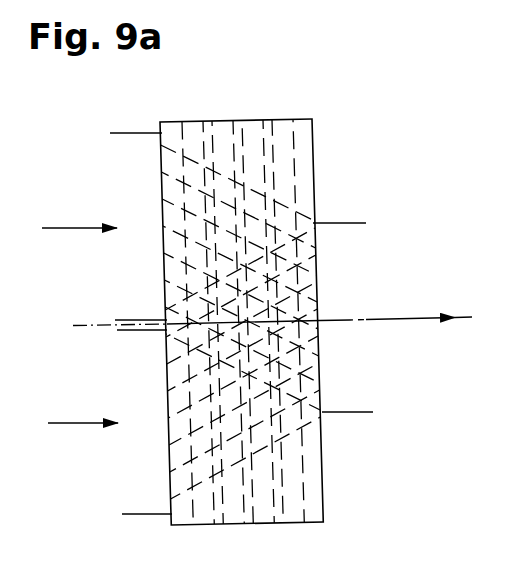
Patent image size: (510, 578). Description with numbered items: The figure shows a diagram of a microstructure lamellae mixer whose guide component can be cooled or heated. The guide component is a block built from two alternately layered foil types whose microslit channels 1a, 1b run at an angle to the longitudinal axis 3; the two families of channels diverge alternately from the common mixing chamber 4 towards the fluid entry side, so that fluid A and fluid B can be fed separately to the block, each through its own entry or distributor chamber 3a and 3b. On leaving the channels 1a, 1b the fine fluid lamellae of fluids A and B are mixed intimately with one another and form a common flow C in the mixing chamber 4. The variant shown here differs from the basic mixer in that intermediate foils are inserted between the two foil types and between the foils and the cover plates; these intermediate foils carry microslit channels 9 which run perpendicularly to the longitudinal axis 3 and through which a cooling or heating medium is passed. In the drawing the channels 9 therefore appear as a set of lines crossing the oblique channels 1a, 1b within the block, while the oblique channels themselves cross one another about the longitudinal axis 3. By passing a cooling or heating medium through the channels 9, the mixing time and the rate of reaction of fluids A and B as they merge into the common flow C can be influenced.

The microslit channels 9 is at (250, 130).
The microslit channel 1a is at (293, 412).
The microslit channel 1b is at (290, 228).
The longitudinal axis 3 is at (333, 320).
The entry chamber 3a is at (128, 178).
The entry chamber 3b is at (133, 379).
The mixing chamber 4 is at (359, 272).
The fluid A is at (79, 216).
The fluid B is at (82, 409).
The common flow C is at (396, 306).